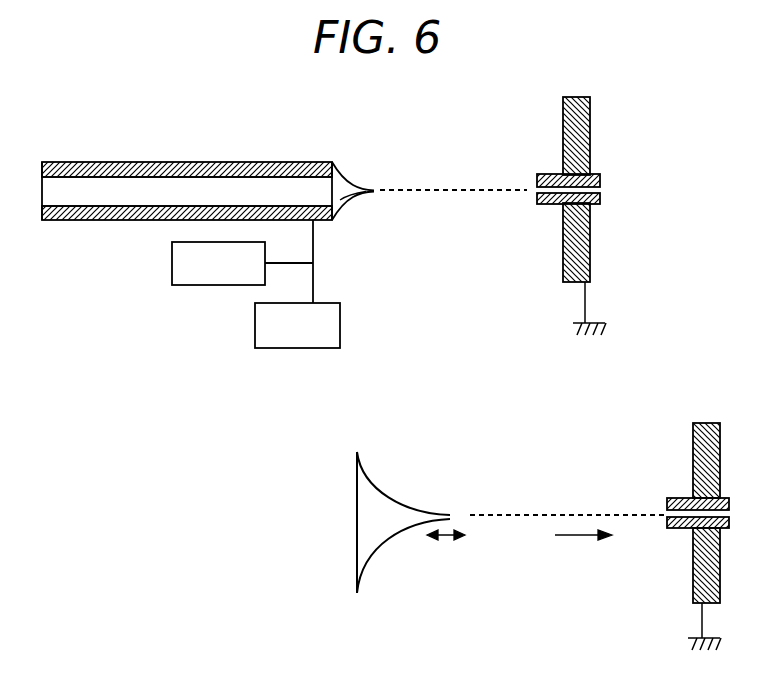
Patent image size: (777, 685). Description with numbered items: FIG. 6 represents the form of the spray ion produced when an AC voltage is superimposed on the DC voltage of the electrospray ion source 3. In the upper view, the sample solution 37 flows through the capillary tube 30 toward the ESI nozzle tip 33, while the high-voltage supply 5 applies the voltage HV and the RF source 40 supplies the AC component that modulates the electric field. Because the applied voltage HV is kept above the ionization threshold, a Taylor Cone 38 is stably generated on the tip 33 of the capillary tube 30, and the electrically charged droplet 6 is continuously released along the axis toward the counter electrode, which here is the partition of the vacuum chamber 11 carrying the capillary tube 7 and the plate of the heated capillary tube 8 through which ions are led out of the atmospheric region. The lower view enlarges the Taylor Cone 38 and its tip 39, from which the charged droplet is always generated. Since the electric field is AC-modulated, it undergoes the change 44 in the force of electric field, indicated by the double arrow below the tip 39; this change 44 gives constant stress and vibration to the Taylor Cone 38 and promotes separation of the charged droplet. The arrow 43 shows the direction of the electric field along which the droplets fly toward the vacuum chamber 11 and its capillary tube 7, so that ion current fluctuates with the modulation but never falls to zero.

The ion source 3 is at (209, 182).
The capillary tube 30 is at (215, 164).
The ESI nozzle tip 33 is at (332, 161).
The sample solution 37 is at (92, 193).
The Taylor Cone 38 is at (350, 195).
The Taylor cone tip 39 is at (450, 512).
The RF power supply 40 is at (197, 286).
The high voltage power supply 5 is at (293, 349).
The electrically charged droplet 6 is at (463, 192).
The capillary tube 7 is at (425, 160).
The capillary tube 8 is at (599, 173).
The vacuum chamber 11 is at (583, 97).
The direction of the electric field 43 is at (584, 538).
The change in the force of electric field 44 is at (446, 539).